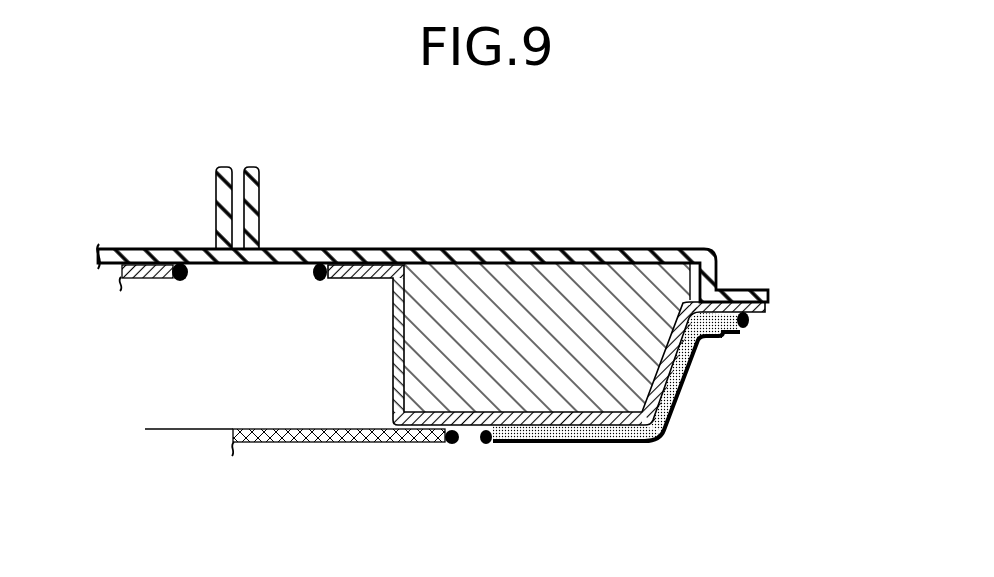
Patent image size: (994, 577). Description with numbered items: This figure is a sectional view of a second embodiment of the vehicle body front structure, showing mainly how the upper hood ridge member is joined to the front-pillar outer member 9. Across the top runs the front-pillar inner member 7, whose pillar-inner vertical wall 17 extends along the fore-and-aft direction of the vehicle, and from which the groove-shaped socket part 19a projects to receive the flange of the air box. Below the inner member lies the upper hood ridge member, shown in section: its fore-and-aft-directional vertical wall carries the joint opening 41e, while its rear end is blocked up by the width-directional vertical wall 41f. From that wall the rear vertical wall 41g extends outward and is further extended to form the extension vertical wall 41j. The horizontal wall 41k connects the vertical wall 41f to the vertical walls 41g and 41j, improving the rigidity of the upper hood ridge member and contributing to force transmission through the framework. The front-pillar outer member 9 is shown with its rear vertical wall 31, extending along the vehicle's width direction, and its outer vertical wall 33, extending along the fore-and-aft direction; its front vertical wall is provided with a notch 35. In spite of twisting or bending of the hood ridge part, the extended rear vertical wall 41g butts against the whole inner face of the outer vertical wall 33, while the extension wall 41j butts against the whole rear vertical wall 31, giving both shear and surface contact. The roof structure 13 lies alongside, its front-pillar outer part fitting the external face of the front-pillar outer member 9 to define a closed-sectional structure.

The front-pillar inner member 7 is at (432, 219).
The pillar-inner vertical wall 17 is at (583, 248).
The socket part 19a is at (258, 192).
The joint opening 41e is at (183, 283).
The width-directional vertical wall 41f is at (392, 340).
The horizontal wall 41k is at (651, 295).
The rear vertical wall 41g is at (563, 445).
The extension vertical wall 41j is at (678, 368).
The front-pillar outer member 9 is at (621, 426).
The rear vertical wall 31 is at (671, 417).
The outer vertical wall 33 is at (625, 443).
The notch 35 is at (473, 444).
The roof structure 13 is at (277, 444).